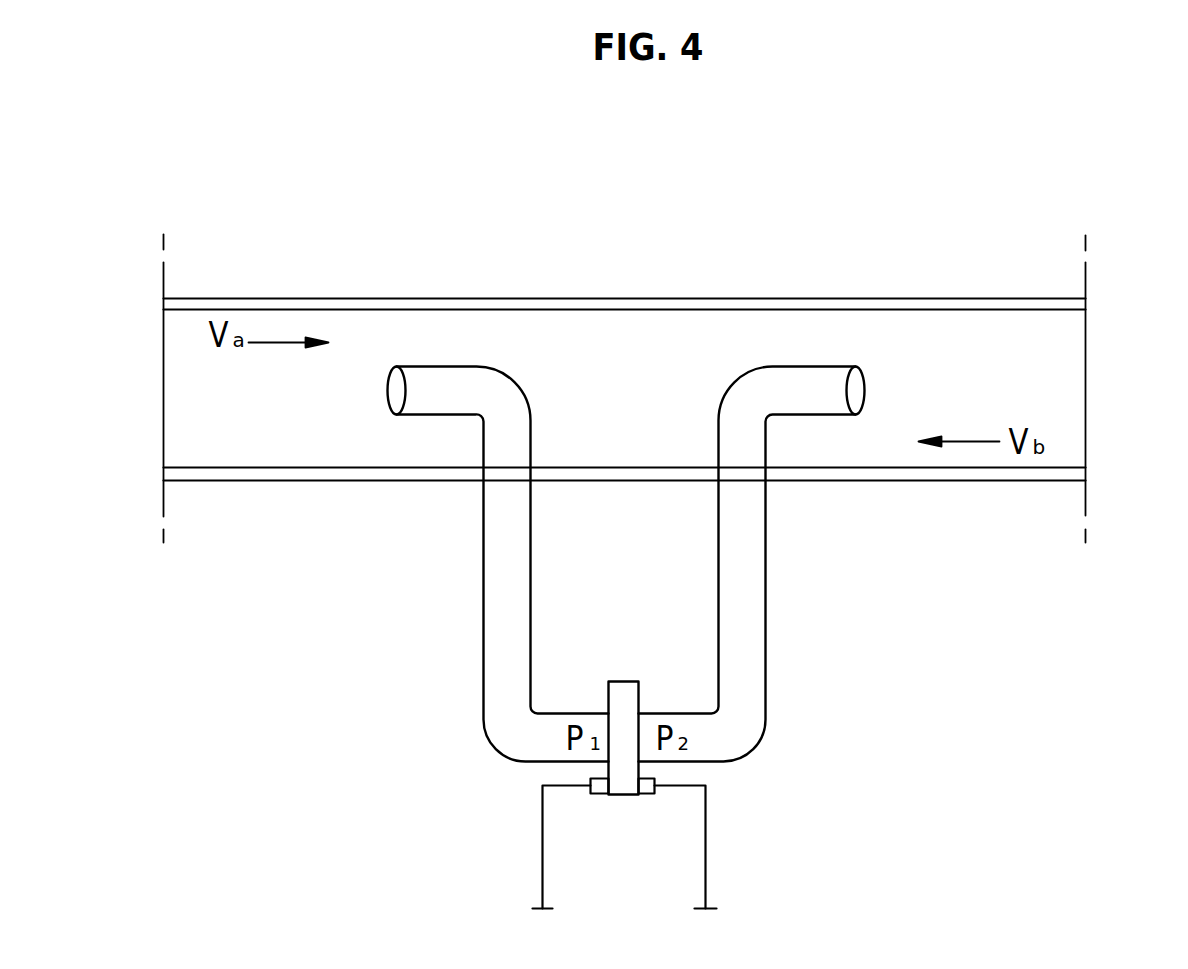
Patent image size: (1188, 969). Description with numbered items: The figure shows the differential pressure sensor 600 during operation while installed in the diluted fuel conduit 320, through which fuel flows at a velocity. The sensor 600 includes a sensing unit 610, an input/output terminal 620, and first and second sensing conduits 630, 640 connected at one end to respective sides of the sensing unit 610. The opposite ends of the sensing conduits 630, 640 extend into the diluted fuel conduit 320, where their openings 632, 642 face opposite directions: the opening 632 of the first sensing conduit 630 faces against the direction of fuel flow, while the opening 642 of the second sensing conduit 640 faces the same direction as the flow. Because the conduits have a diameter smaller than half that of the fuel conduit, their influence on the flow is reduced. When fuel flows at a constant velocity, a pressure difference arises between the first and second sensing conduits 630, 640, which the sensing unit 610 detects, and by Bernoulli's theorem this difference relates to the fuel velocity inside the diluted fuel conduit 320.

The diluted fuel conduit 320 is at (623, 308).
The differential pressure sensor 600 is at (1032, 218).
The sensing unit 610 is at (620, 682).
The input/output terminal 620 is at (594, 779).
The first sensing conduit 630 is at (469, 493).
The first tube inlet 632 is at (392, 391).
The second sensing conduit 640 is at (781, 494).
The second tube inlet 642 is at (859, 391).